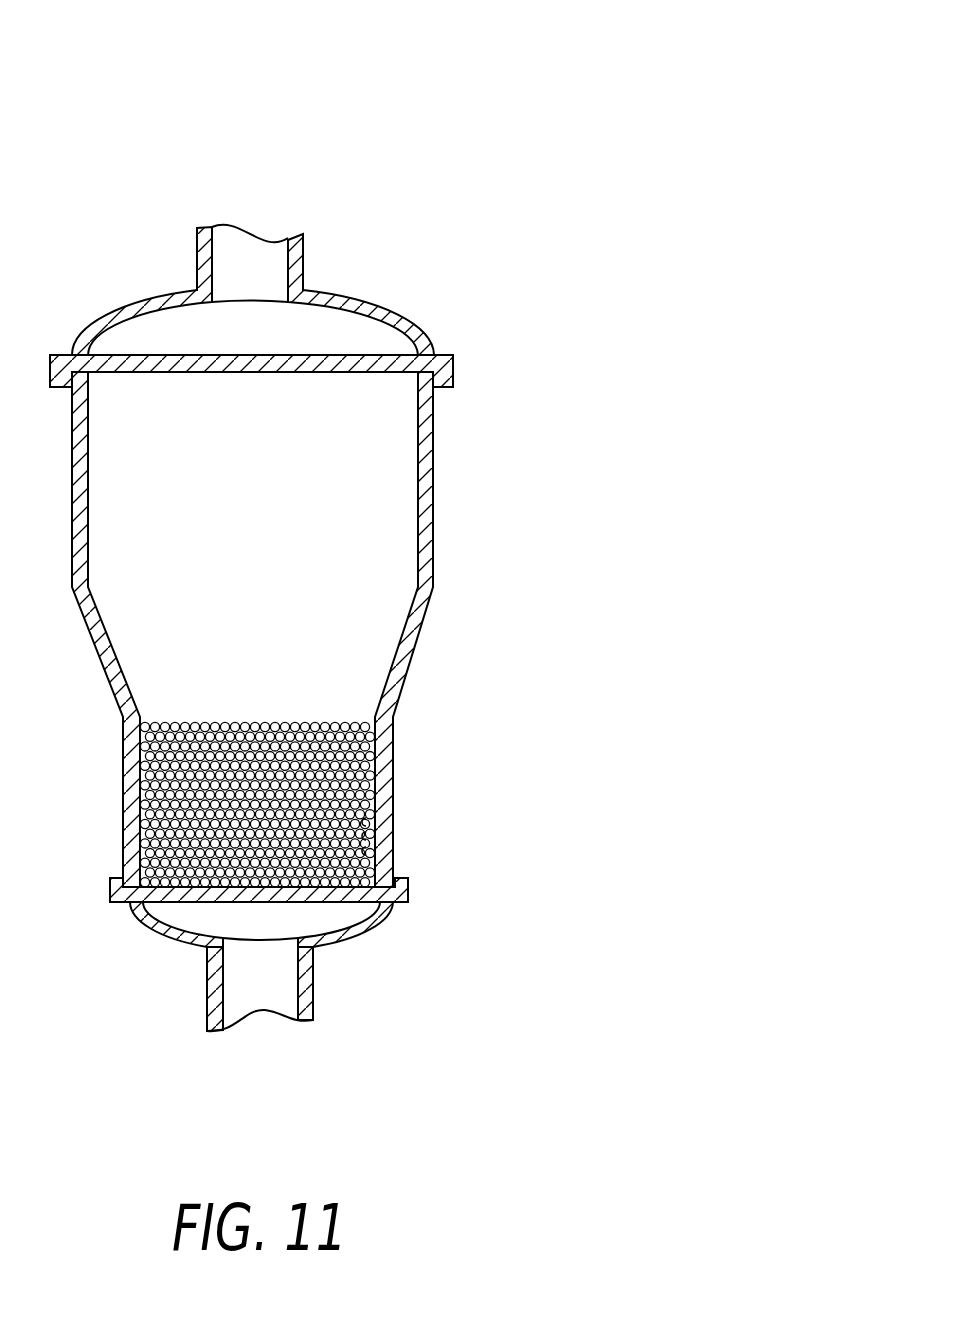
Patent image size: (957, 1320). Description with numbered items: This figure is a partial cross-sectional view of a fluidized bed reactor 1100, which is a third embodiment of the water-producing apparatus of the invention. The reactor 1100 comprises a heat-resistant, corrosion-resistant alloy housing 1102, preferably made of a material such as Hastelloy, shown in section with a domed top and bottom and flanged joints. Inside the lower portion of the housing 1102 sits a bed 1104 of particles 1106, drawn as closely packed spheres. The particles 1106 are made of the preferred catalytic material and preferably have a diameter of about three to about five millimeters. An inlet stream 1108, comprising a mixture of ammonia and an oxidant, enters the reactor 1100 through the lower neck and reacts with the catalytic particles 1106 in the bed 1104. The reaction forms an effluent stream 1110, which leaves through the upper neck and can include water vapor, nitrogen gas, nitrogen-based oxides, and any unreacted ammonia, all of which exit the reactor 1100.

The fluidized bed reactor 1100 is at (420, 93).
The housing 1102 is at (397, 326).
The bed 1104 is at (352, 786).
The particles 1106 is at (370, 825).
The inlet stream 1108 is at (267, 1007).
The effluent stream 1110 is at (254, 270).